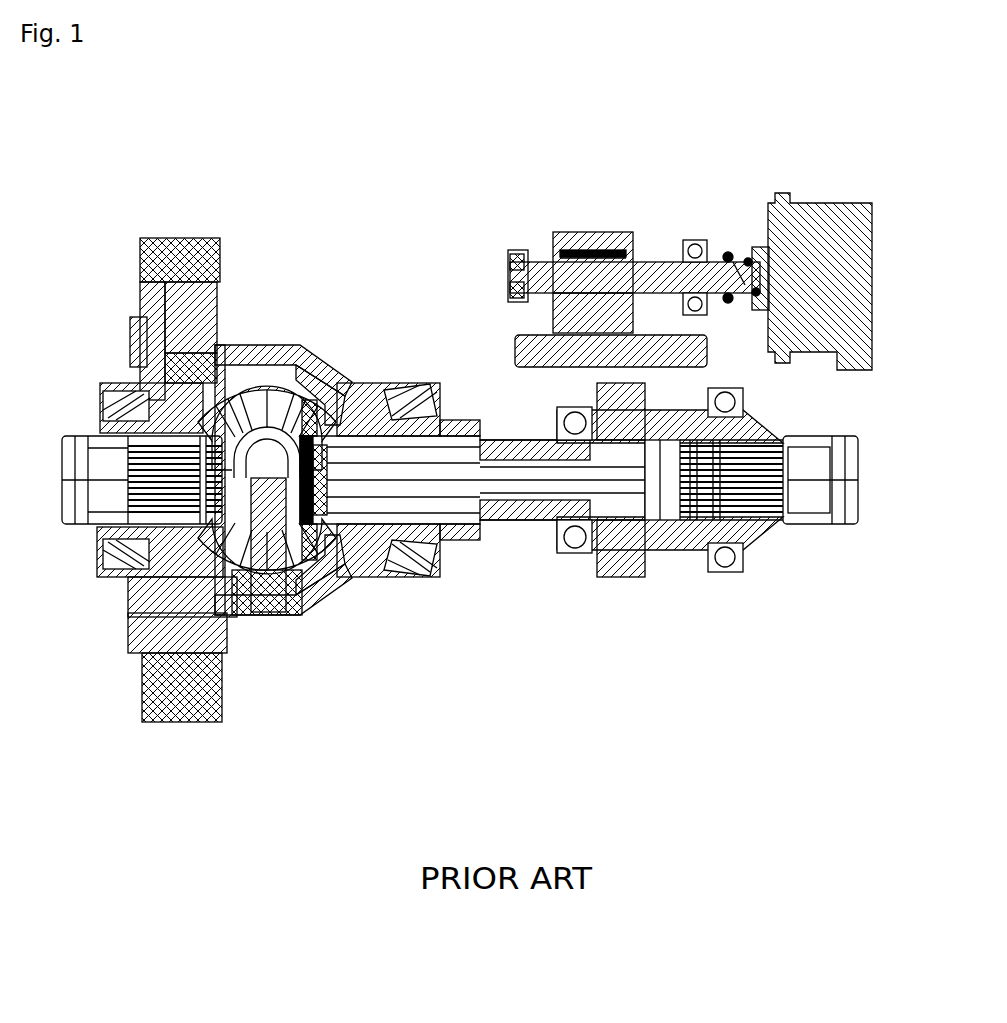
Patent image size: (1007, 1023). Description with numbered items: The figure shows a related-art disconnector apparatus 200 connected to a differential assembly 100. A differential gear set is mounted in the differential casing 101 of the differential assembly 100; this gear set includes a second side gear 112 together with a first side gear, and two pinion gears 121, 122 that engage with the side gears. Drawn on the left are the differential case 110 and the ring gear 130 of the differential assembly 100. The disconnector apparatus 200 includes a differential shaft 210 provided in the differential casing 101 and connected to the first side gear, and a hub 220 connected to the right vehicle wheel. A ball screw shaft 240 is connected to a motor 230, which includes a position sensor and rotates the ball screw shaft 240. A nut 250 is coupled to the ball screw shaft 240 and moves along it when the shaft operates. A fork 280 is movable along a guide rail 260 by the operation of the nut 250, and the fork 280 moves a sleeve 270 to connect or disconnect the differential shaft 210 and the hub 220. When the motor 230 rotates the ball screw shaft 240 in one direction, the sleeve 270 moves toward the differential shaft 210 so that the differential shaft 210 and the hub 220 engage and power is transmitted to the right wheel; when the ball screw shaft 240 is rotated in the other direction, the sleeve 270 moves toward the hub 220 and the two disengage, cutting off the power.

The differential assembly 100 is at (302, 345).
The differential casing 101 is at (318, 597).
The differential case 110 is at (343, 590).
The second side gear 112 is at (243, 610).
The pinion gear 121 is at (258, 352).
The pinion gear 122 is at (285, 608).
The ring gear 130 is at (190, 240).
The disconnector apparatus 200 is at (731, 218).
The differential shaft 210 is at (490, 445).
The hub 220 is at (695, 552).
The motor 230 is at (815, 195).
The ball screw shaft 240 is at (657, 260).
The nut 250 is at (590, 230).
The guide rail 260 is at (520, 355).
The sleeve 270 is at (590, 418).
The fork 280 is at (530, 383).